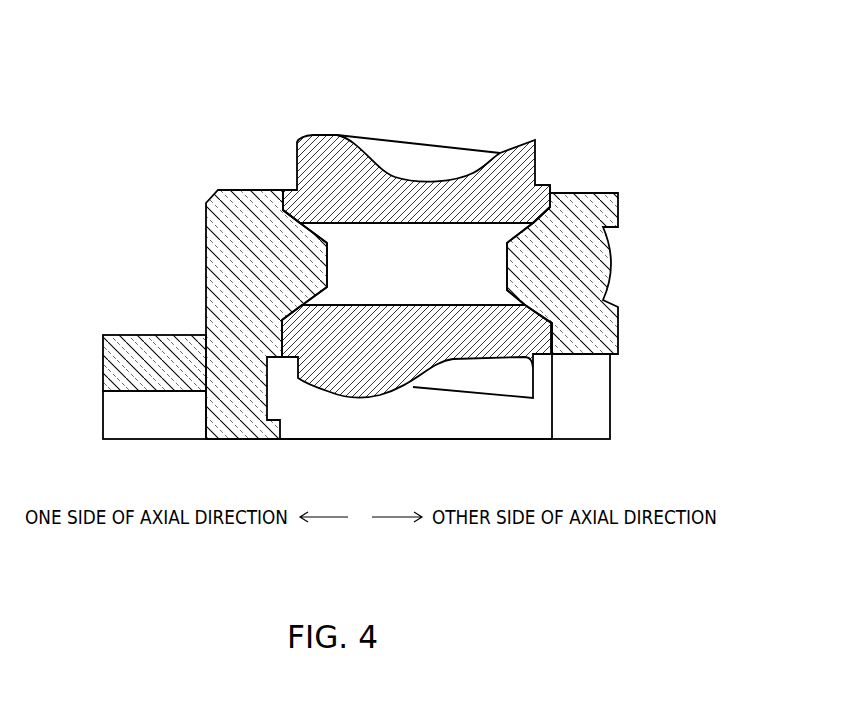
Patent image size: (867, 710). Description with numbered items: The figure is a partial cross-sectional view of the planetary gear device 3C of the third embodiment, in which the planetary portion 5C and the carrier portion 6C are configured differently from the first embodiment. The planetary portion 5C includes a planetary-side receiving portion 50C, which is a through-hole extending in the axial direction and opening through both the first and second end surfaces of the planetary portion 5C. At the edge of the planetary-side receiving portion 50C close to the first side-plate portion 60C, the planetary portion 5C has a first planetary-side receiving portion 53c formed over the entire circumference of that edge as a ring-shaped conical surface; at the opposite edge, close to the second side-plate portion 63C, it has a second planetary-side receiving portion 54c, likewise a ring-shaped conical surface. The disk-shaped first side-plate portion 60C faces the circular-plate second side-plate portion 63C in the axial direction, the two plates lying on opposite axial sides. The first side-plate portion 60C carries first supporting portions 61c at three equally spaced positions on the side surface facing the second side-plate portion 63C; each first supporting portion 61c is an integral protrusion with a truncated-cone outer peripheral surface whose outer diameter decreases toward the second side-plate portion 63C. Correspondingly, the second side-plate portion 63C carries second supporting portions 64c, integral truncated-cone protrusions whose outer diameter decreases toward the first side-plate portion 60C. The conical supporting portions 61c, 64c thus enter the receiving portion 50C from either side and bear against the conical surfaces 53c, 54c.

The planetary gear device 3C is at (105, 326).
The planetary portion 5C is at (416, 220).
The carrier portion 6C is at (360, 275).
The planetary-side receiving portion 50C is at (412, 224).
The first planetary-side receiving portion 53c is at (292, 219).
The second planetary-side receiving portion 54c is at (534, 224).
The first side-plate portion 60C is at (247, 314).
The first supporting portion 61c is at (306, 278).
The second side-plate portion 63C is at (523, 233).
The second supporting portion 64c is at (518, 280).